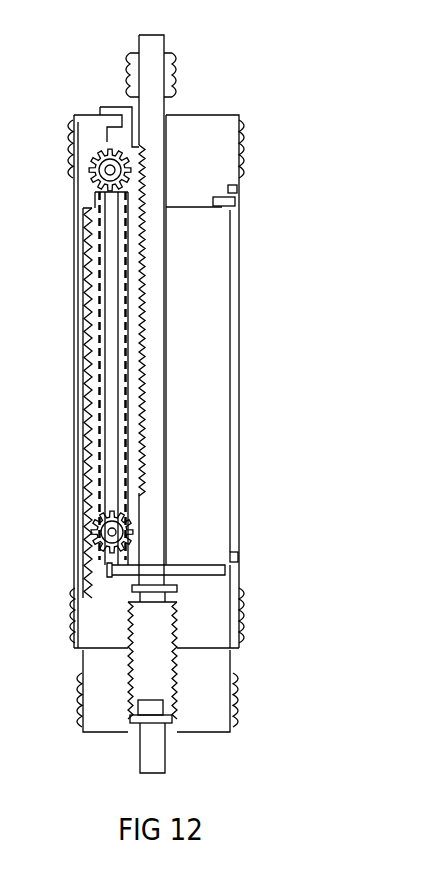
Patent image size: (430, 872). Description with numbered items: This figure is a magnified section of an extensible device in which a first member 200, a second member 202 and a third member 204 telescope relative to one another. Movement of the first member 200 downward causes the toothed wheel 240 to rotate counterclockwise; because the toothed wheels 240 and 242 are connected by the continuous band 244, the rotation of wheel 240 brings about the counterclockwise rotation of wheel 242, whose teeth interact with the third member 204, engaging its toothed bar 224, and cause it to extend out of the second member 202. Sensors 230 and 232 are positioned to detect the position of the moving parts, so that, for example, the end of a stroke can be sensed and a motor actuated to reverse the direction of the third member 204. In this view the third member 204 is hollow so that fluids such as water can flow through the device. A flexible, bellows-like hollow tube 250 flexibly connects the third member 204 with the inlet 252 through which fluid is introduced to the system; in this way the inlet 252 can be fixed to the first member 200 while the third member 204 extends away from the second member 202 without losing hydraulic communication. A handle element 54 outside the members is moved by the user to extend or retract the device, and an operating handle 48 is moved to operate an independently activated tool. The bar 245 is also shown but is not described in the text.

The third member 204 is at (153, 63).
The second member 202 is at (213, 155).
The sensor 230 is at (237, 188).
The toothed wheel 242 is at (82, 187).
The continuous band 244 is at (127, 283).
The toothed bar 224 is at (142, 386).
The slide bar 245 is at (115, 423).
The first member 200 is at (208, 468).
The toothed wheel 240 is at (87, 557).
The sensor 232 is at (238, 557).
The handle element 54 is at (67, 608).
The operating handle 48 is at (72, 690).
The flexible bellows-like hollow tube 250 is at (157, 668).
The inlet 252 is at (160, 753).